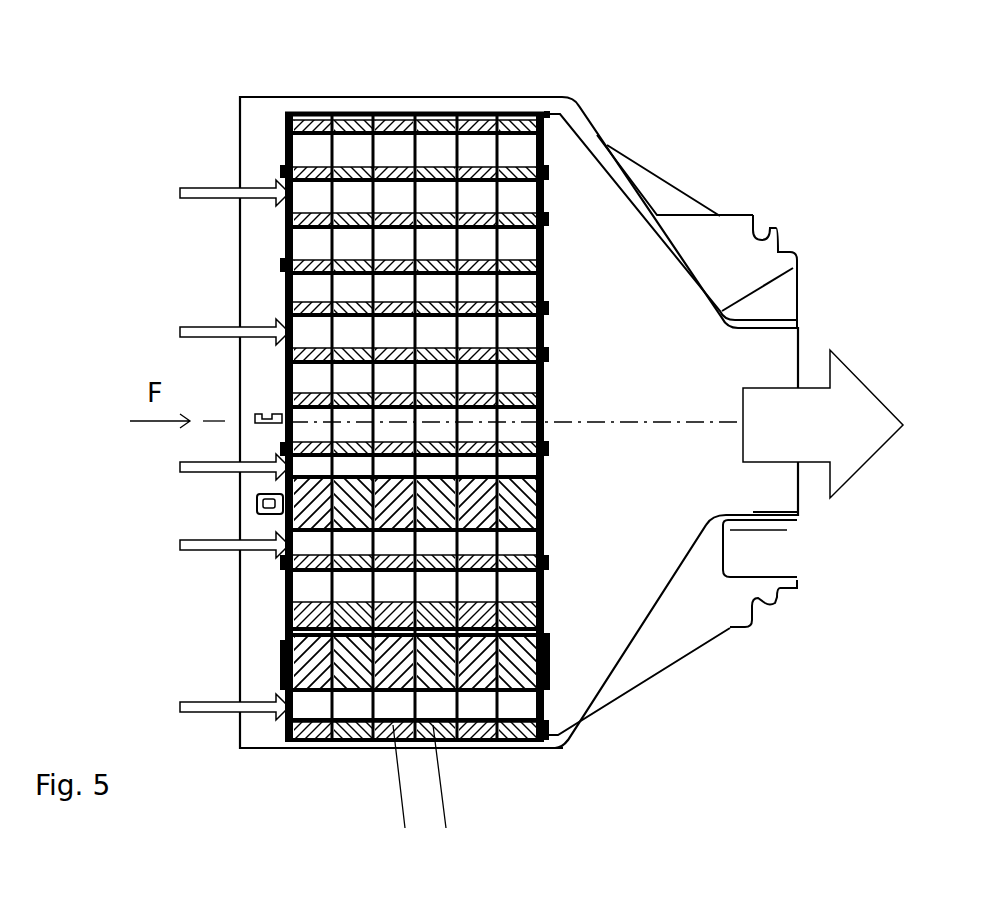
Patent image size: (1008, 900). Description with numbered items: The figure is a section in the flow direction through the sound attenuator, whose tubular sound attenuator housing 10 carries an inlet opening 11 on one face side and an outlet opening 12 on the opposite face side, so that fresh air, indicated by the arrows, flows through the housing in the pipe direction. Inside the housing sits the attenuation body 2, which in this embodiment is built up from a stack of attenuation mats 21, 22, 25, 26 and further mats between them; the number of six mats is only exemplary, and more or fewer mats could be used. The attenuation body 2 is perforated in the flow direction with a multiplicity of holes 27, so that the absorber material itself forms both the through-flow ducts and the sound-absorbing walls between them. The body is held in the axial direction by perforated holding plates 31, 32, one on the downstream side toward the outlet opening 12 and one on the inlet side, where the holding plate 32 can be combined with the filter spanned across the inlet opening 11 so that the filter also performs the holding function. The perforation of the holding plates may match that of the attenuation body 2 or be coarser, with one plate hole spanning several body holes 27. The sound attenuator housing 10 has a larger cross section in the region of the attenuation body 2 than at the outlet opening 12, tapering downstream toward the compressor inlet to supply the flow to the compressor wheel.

The attenuation body 2 is at (283, 80).
The sound attenuator housing 10 is at (602, 160).
The inlet opening 11 is at (253, 147).
The outlet opening 12 is at (780, 483).
The attenuation mat 21 is at (517, 725).
The attenuation mat 22 is at (475, 725).
The attenuation mat 25 is at (353, 725).
The attenuation mat 26 is at (312, 725).
The holes, perforation 27 is at (293, 286).
The perforated holding plate 31 is at (541, 372).
The perforated holding plate 32 is at (285, 590).